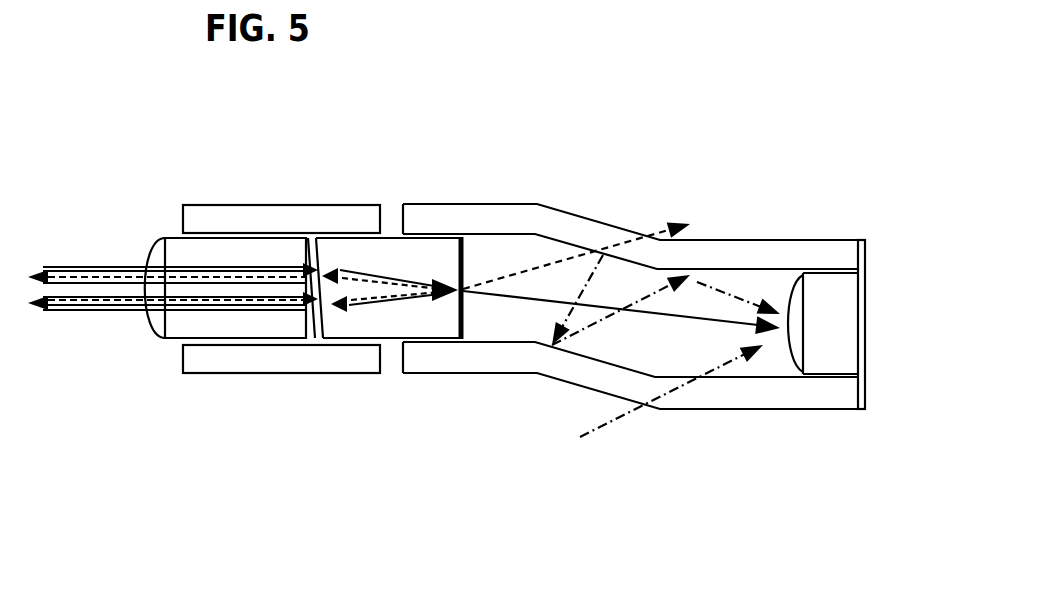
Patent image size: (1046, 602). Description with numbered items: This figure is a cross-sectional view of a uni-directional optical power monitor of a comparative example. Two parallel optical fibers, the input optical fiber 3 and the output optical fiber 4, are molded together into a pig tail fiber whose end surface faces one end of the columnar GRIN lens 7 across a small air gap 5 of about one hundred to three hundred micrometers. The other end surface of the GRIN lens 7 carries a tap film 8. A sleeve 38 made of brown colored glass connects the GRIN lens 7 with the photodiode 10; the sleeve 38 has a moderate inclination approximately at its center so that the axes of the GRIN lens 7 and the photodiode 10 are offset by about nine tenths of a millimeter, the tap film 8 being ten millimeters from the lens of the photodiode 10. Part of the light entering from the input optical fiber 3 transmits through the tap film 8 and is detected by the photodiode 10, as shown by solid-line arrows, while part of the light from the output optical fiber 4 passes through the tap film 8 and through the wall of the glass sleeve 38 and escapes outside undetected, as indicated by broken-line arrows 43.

The input optical fiber 3 is at (122, 272).
The output optical fiber 4 is at (98, 306).
The air gap 5 is at (307, 250).
The columnar GRIN lens 7 is at (410, 322).
The tap film 8 is at (465, 268).
The photodiode 10 is at (833, 345).
The sleeve 38 is at (723, 395).
The broken-line arrows 43 is at (690, 226).